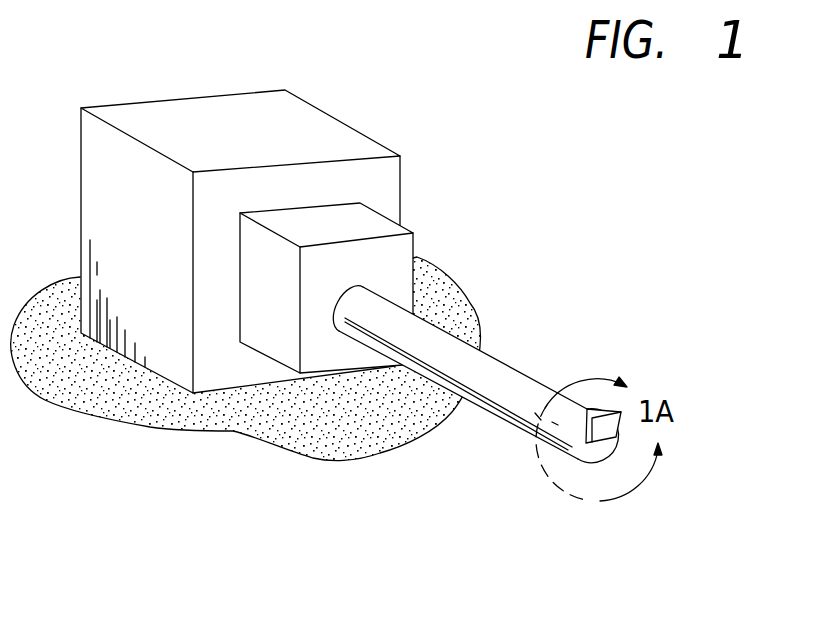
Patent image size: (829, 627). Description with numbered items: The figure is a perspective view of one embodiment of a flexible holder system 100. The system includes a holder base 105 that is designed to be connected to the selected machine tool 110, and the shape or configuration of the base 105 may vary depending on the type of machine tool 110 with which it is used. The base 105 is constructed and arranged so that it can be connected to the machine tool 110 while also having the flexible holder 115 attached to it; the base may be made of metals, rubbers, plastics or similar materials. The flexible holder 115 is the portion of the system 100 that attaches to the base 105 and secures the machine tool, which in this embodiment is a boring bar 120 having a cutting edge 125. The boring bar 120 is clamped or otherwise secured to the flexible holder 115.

The flexible holder system 100 is at (485, 182).
The holder base 105 is at (222, 122).
The machine tool 110 is at (353, 438).
The flexible holder 115 is at (270, 330).
The boring bar 120 is at (515, 368).
The cutting edge 125 is at (593, 445).